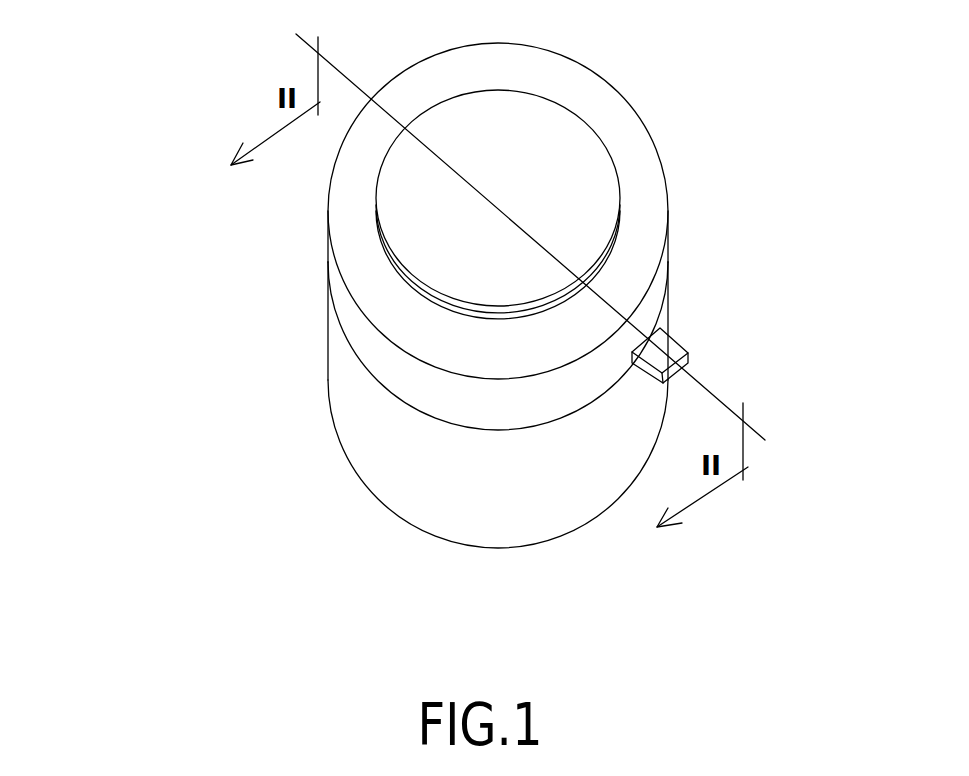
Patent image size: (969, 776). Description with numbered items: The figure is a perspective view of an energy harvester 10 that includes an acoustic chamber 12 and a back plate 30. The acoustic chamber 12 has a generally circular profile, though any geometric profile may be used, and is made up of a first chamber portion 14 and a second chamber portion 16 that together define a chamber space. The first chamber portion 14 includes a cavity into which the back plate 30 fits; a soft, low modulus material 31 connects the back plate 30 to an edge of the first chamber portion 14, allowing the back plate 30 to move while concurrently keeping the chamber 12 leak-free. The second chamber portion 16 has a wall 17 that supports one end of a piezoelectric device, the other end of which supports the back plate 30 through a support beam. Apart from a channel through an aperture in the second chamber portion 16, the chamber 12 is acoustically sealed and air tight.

The energy harvester 10 is at (143, 250).
The acoustic chamber 12 is at (450, 475).
The first chamber portion 14 is at (660, 300).
The second chamber portion 16 is at (643, 393).
The wall 17 is at (355, 432).
The back plate 30 is at (542, 127).
The soft, low modulus material 31 is at (610, 262).